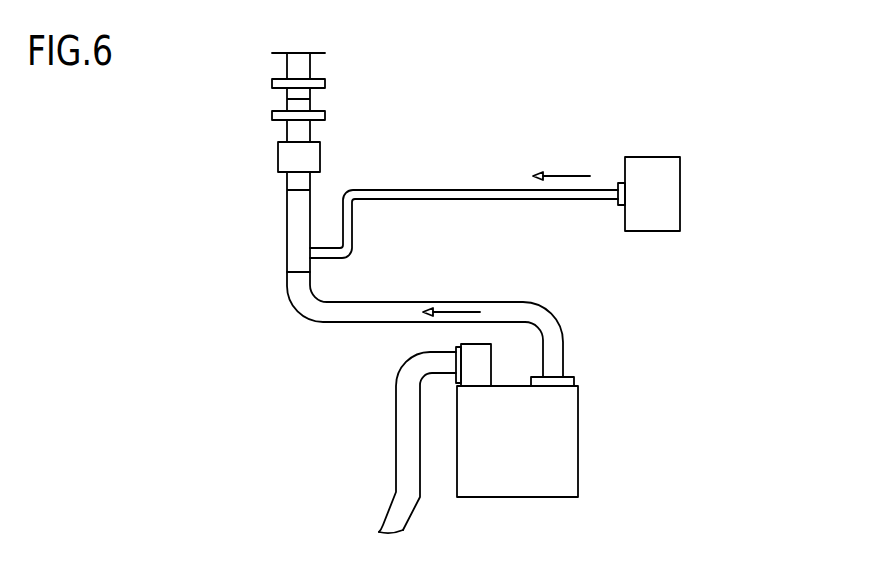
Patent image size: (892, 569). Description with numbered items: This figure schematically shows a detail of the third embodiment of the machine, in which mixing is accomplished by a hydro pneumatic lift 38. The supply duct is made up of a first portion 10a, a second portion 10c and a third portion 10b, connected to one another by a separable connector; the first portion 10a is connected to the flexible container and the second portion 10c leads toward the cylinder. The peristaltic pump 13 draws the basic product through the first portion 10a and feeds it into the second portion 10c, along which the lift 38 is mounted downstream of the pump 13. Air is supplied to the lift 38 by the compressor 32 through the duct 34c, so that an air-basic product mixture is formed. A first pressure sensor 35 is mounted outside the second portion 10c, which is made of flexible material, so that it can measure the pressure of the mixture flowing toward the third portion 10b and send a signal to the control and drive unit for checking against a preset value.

The first portion of the supply duct 10a is at (405, 470).
The third portion of the supply duct 10b is at (298, 63).
The second portion of the supply duct 10c is at (548, 333).
The peristaltic pump 13 is at (592, 458).
The compressor 32 is at (668, 168).
The duct 34c is at (516, 198).
The first pressure sensor 35 is at (295, 155).
The hydro pneumatic lift 38 is at (295, 227).